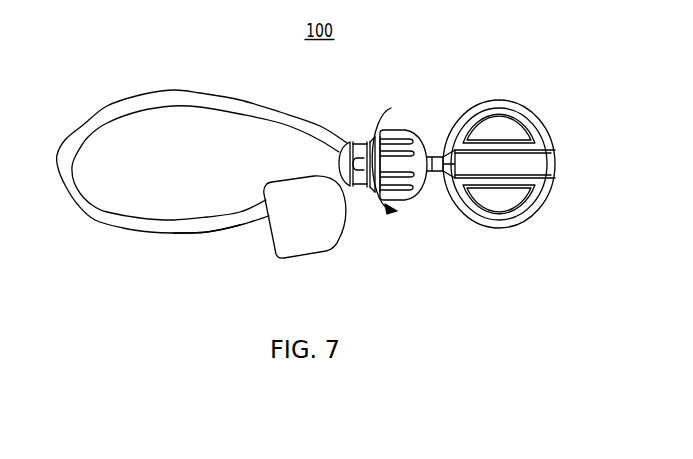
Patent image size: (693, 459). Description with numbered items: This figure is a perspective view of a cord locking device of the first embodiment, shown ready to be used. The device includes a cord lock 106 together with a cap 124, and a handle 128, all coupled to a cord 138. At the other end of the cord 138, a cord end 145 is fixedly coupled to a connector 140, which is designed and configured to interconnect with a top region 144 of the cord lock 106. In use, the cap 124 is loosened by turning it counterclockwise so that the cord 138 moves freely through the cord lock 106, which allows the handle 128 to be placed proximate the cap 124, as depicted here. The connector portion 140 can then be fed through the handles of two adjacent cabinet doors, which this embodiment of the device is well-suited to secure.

The cord lock 106 is at (350, 141).
The cap 124 is at (405, 123).
The handle 128 is at (551, 133).
The cord 138 is at (122, 98).
The connector 140 is at (266, 184).
The top region 144 is at (356, 187).
The cord end 145 is at (204, 219).